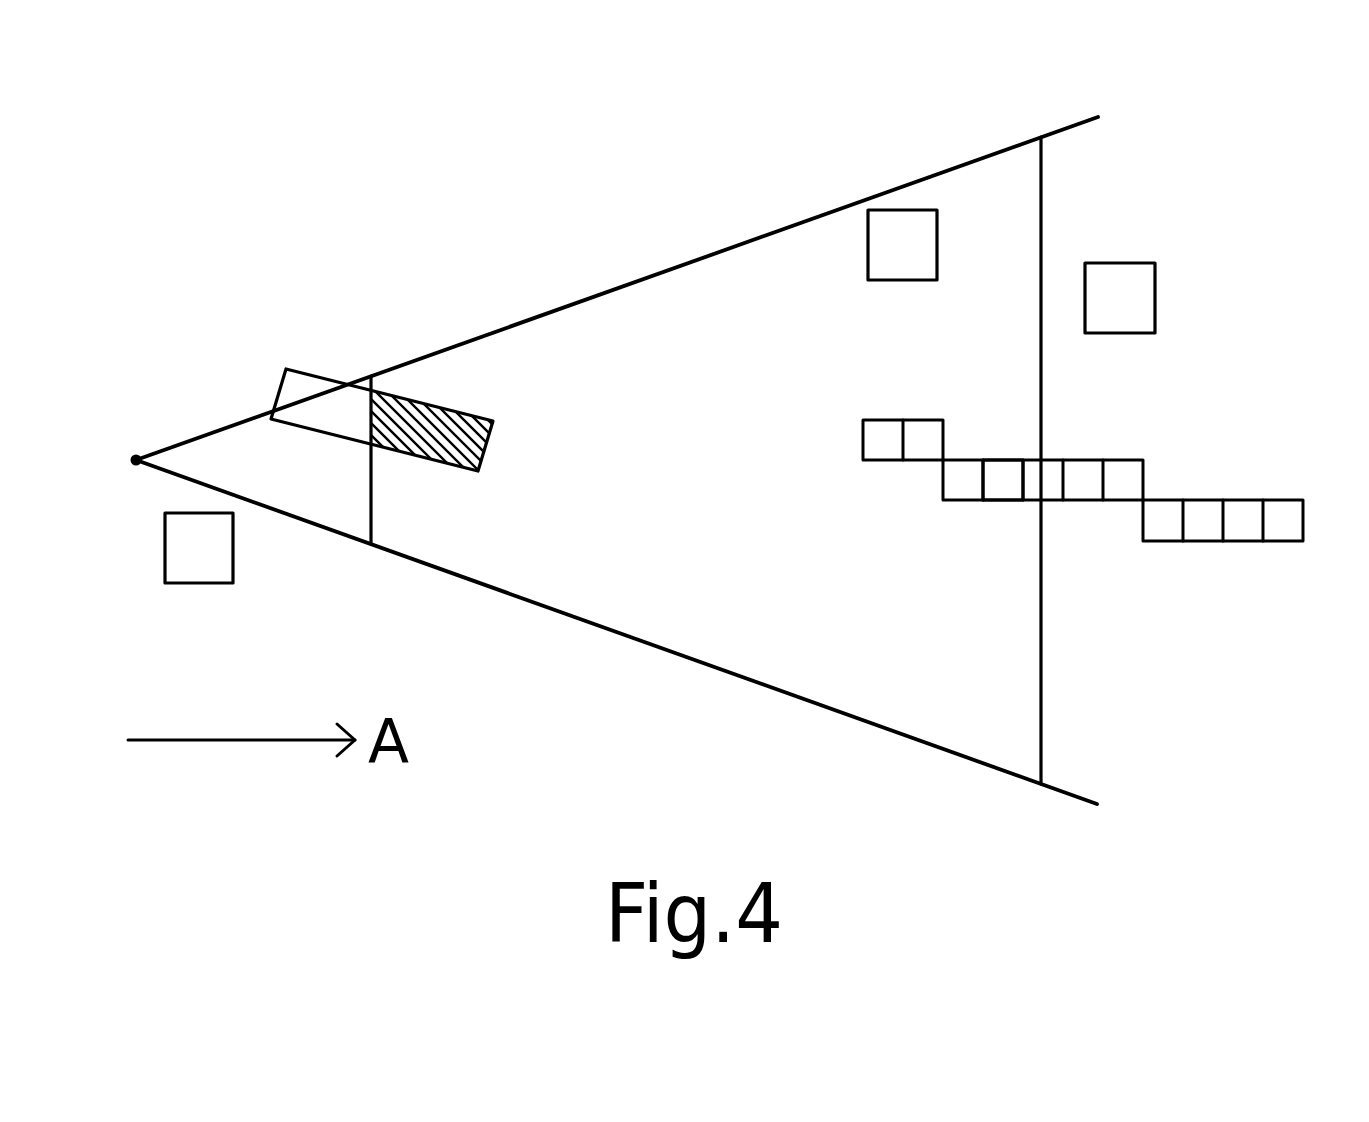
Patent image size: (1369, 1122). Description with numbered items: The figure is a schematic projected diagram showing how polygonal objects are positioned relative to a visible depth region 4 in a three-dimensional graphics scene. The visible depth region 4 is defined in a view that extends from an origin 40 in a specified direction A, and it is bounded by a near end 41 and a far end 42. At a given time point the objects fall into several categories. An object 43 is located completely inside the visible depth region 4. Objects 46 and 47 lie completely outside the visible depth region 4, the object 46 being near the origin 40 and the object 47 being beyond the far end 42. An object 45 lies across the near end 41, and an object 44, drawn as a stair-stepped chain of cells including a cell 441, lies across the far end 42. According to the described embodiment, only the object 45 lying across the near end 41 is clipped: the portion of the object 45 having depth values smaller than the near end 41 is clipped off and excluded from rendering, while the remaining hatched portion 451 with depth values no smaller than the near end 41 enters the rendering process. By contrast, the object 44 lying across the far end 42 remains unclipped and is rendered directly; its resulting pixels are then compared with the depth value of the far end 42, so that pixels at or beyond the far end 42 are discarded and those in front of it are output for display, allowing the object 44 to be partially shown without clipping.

The visible depth region 4 is at (795, 342).
The origin 40 is at (135, 457).
The near end 41 is at (363, 505).
The far end 42 is at (1042, 710).
The object 43 is at (906, 228).
The object 44 is at (1094, 447).
The cell of staircase object 441 is at (1003, 472).
The object 45 is at (423, 352).
The visible portion of object 45 451 is at (400, 400).
The object 46 is at (188, 543).
The object 47 is at (1123, 282).